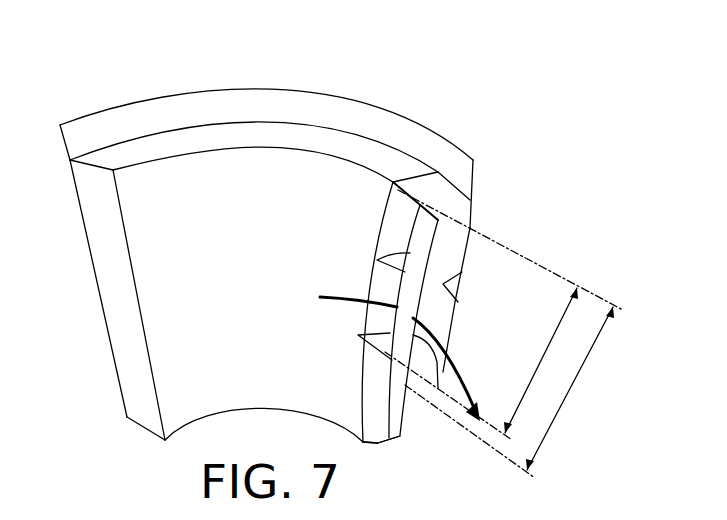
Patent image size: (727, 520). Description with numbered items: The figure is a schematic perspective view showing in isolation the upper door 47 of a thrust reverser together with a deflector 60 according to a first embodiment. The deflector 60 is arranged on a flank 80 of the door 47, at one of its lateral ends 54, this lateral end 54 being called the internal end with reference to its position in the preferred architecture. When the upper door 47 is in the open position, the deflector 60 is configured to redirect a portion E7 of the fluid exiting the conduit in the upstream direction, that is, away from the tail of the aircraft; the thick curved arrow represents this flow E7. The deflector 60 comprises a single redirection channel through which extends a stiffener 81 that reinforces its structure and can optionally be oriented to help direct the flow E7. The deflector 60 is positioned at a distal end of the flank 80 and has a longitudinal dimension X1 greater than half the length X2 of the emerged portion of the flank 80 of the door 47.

The upper door 47 is at (100, 66).
The lateral end 54 is at (405, 164).
The deflector 60 is at (468, 253).
The stiffener 81 is at (465, 275).
The flank 80 is at (387, 408).
The portion of the fluid E7 is at (465, 375).
The longitudinal dimension of the deflector X1 is at (504, 315).
The length of the emerged portion of the flank X2 is at (509, 392).